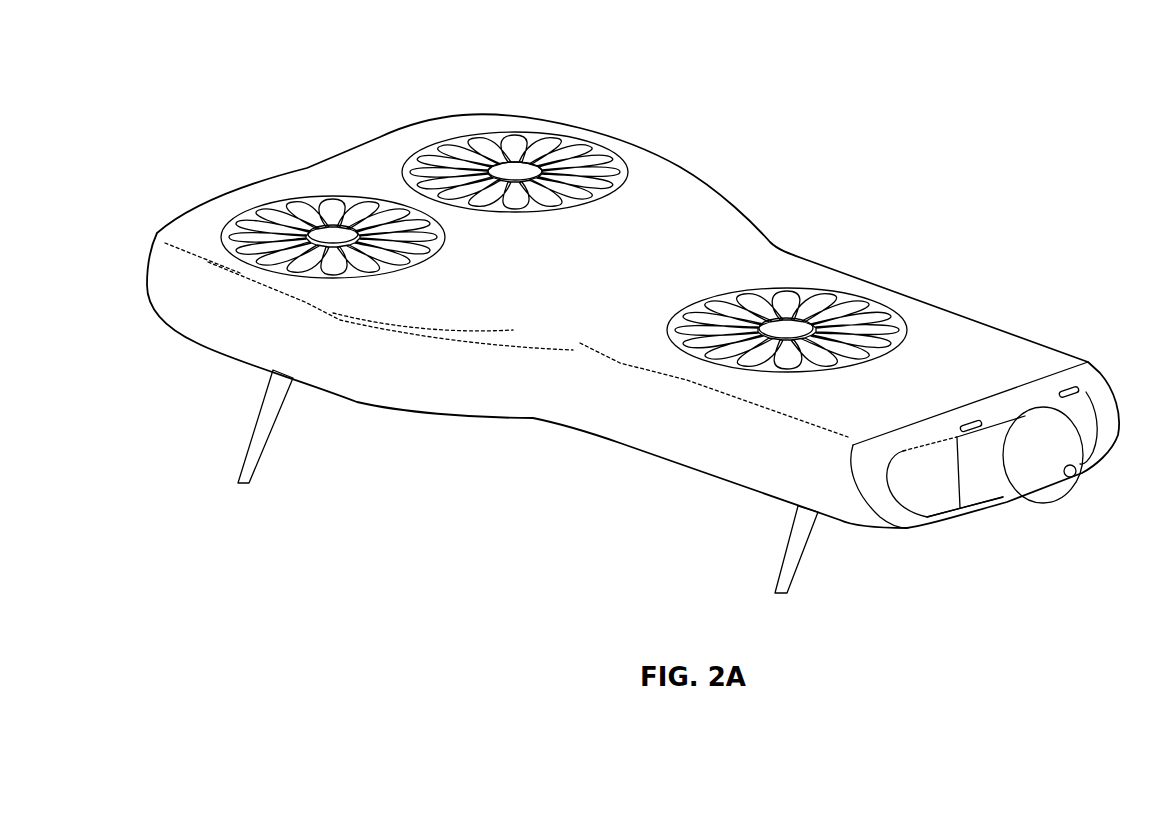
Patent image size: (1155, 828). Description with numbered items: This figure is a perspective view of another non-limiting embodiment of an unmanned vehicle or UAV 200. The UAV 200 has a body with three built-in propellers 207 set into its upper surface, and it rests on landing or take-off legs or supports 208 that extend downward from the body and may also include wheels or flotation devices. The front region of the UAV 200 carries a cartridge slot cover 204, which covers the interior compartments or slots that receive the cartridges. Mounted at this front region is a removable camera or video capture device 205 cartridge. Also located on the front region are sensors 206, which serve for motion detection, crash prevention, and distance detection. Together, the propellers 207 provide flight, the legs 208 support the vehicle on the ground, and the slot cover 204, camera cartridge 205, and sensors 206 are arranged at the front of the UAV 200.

The UAV 200 is at (1046, 133).
The cartridge slot cover 204 is at (933, 520).
The removable camera or video capture device cartridge 205 is at (1067, 487).
The sensors 206 is at (1072, 386).
The built-in propellers 207 is at (842, 296).
The landing or take-off legs or supports 208 is at (258, 436).